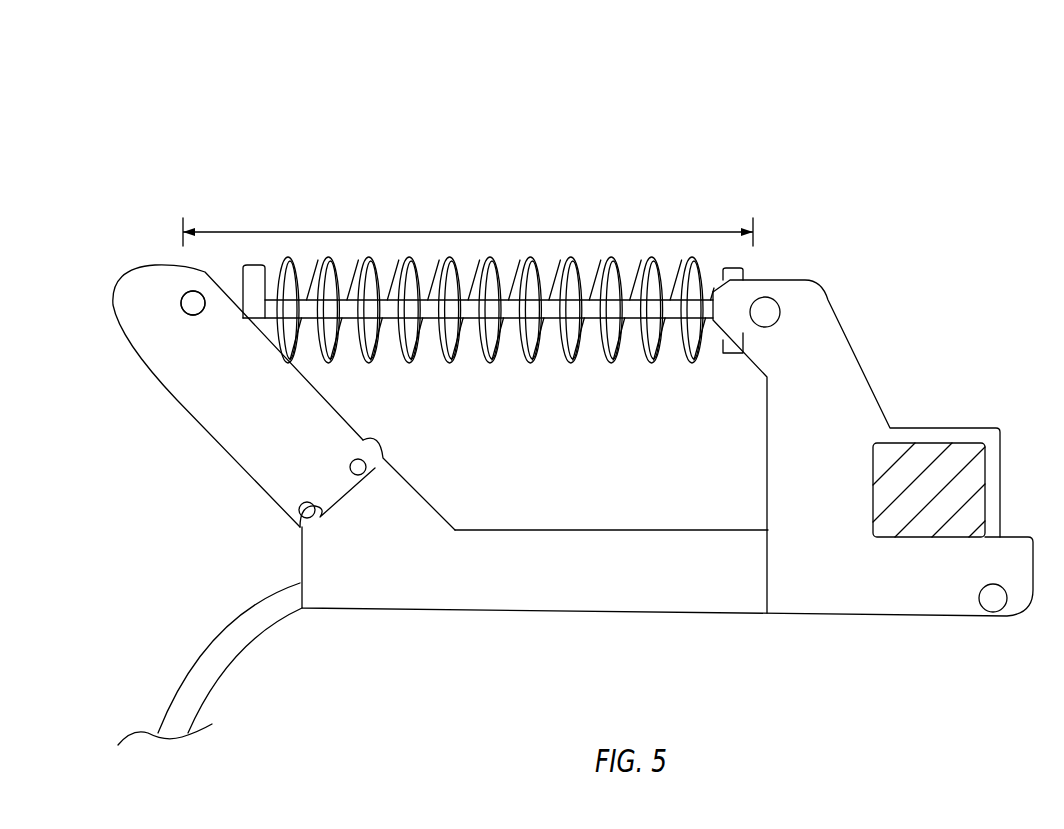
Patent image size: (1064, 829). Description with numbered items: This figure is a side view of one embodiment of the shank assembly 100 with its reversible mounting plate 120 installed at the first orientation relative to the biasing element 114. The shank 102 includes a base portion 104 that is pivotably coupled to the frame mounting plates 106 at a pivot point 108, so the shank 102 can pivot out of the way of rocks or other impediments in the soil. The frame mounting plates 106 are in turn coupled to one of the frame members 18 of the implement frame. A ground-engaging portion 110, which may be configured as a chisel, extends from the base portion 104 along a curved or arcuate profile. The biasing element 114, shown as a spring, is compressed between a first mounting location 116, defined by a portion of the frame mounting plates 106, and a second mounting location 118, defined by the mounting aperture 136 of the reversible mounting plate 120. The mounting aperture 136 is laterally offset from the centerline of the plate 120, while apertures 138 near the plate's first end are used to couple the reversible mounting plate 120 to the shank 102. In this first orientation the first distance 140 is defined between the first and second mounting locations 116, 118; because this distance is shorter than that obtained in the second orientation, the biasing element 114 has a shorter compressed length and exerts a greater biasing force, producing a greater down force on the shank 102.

The shank assembly 100 is at (130, 104).
The shank 102 is at (205, 586).
The base portion 104 is at (595, 602).
The frame mounting plates 106 is at (838, 357).
The pivot point 108 is at (990, 605).
The ground-engaging portion 110 is at (230, 647).
The biasing element 114 is at (490, 257).
The first mounting location 116 is at (772, 302).
The second mounting location 118 is at (190, 292).
The mounting aperture 136 is at (148, 264).
The reversible mounting plate 120 is at (220, 438).
The apertures 138 is at (359, 457).
The first distance 140 is at (703, 231).
The frame member 18 is at (937, 440).